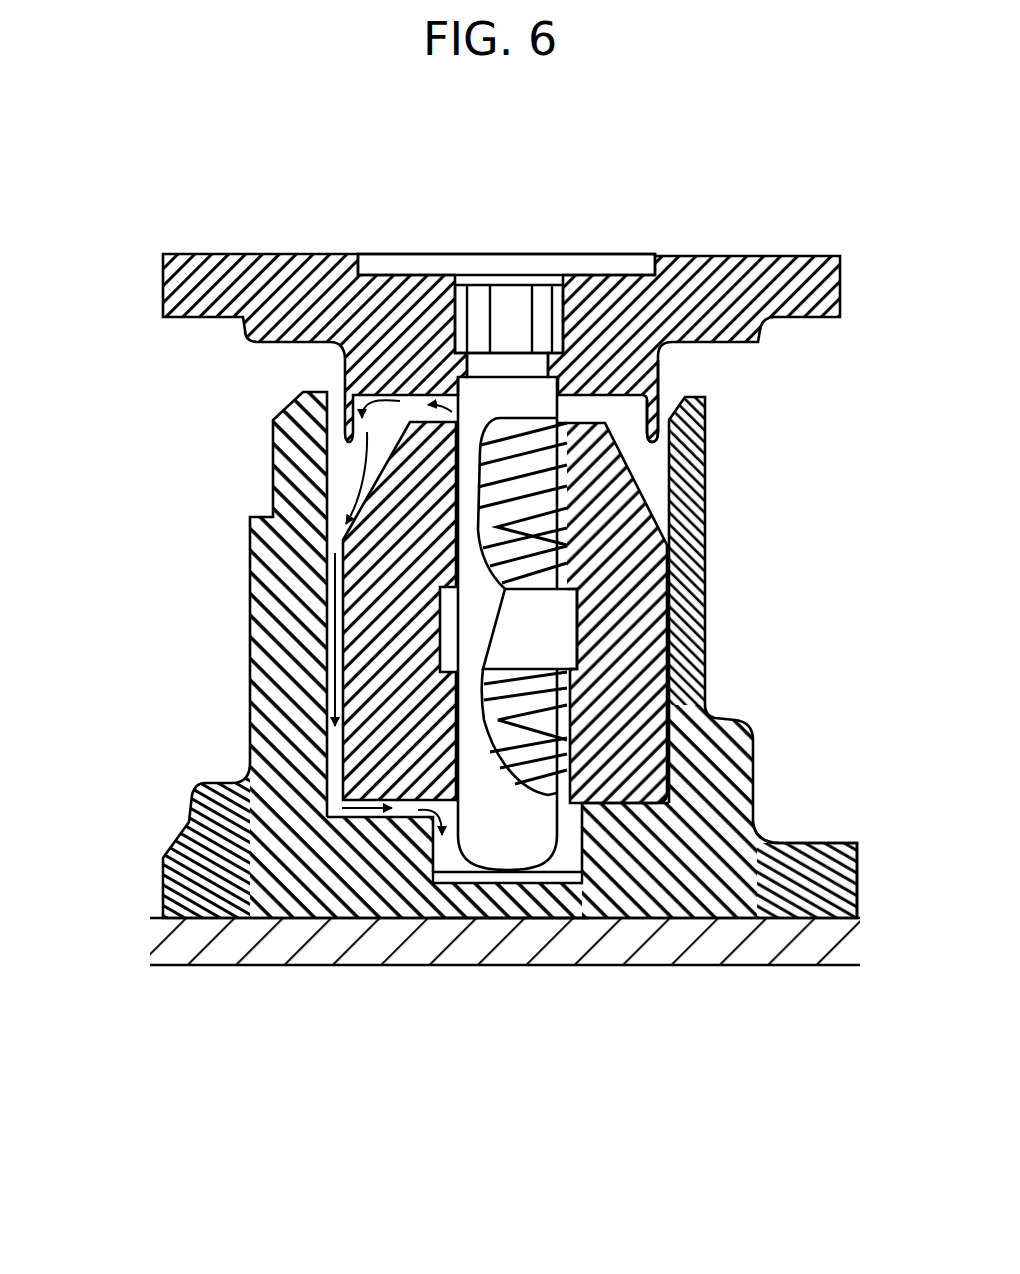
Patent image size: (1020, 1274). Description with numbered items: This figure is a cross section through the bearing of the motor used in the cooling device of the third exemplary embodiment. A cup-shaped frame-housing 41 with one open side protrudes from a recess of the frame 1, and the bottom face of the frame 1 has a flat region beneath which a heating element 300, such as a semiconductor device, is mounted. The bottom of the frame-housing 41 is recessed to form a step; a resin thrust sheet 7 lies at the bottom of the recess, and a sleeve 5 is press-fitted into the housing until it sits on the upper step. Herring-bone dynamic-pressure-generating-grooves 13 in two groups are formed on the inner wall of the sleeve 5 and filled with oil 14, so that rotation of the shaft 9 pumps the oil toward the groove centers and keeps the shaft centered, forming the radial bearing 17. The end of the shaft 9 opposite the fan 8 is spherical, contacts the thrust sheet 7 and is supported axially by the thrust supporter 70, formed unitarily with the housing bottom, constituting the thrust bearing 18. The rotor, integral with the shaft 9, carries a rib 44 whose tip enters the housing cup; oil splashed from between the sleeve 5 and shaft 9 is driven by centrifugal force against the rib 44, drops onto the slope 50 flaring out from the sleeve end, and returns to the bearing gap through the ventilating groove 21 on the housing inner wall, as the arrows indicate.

The frame 1 is at (190, 900).
The sleeve 5 is at (330, 807).
The thrust sheet 7 is at (633, 916).
The fan 8 is at (276, 292).
The shaft 9 is at (498, 838).
The dynamic-pressure-generating-grooves 13 is at (522, 457).
The oil 14 is at (432, 710).
The radial bearing 17 is at (562, 533).
The thrust bearing 18 is at (557, 877).
The ventilating groove 21 is at (333, 652).
The frame-housing 41 is at (723, 873).
The rib 44 is at (655, 395).
The slope 50 is at (640, 487).
The thrust supporter 70 is at (507, 918).
The heating element 300 is at (805, 930).